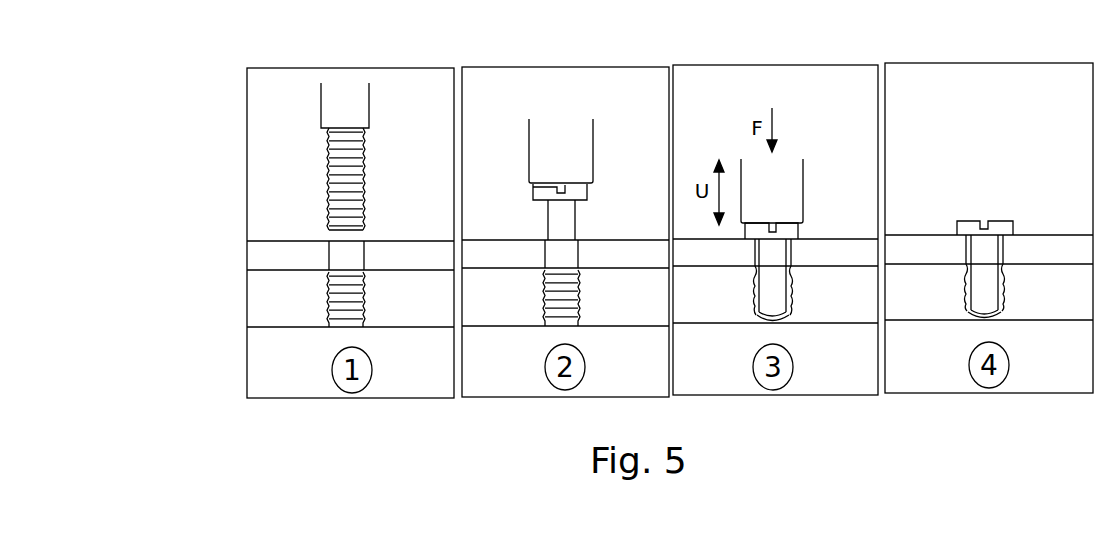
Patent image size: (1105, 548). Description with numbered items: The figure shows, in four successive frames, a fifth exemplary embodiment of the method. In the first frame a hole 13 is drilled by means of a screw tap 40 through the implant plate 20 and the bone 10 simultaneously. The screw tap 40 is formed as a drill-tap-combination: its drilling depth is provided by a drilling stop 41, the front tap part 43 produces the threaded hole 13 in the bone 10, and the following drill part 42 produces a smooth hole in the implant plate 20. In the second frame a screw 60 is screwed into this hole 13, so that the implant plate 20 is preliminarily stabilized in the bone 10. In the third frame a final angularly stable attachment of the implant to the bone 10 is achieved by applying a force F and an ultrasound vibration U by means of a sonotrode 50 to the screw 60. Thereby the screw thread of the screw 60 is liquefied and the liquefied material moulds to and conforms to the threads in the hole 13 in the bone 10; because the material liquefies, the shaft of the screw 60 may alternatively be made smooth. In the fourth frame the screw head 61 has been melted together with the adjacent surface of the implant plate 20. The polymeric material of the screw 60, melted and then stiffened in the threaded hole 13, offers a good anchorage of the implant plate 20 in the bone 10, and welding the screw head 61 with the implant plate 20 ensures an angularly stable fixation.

The bone 10 is at (262, 305).
The hole 13 is at (347, 307).
The implant plate 20 is at (262, 256).
The screw tap 40 is at (304, 156).
The drilling stop 41 is at (365, 132).
The drill part 42 is at (333, 147).
The front tap part 43 is at (350, 179).
The sonotrode 50 is at (539, 146).
The screw 60 is at (798, 177).
The screw head 61 is at (1002, 226).